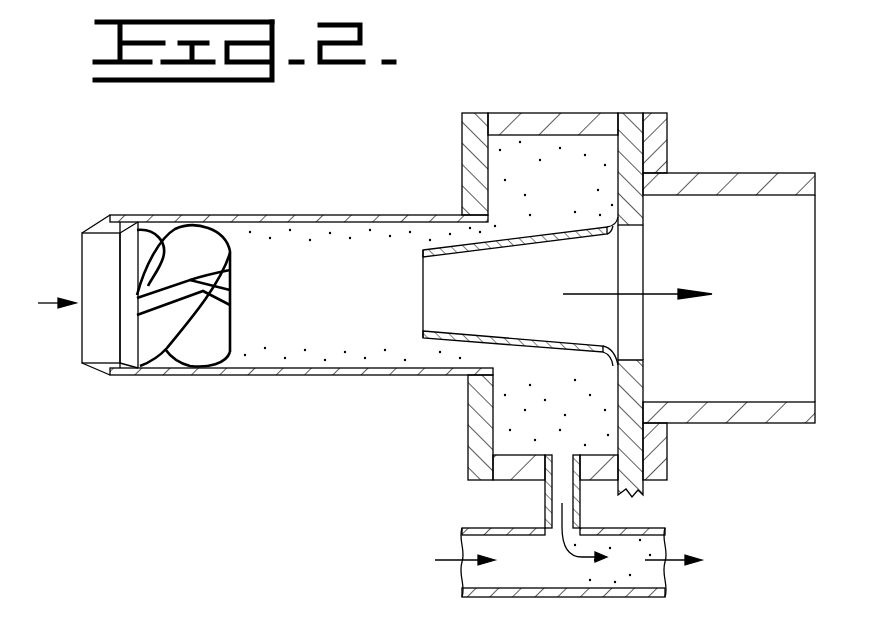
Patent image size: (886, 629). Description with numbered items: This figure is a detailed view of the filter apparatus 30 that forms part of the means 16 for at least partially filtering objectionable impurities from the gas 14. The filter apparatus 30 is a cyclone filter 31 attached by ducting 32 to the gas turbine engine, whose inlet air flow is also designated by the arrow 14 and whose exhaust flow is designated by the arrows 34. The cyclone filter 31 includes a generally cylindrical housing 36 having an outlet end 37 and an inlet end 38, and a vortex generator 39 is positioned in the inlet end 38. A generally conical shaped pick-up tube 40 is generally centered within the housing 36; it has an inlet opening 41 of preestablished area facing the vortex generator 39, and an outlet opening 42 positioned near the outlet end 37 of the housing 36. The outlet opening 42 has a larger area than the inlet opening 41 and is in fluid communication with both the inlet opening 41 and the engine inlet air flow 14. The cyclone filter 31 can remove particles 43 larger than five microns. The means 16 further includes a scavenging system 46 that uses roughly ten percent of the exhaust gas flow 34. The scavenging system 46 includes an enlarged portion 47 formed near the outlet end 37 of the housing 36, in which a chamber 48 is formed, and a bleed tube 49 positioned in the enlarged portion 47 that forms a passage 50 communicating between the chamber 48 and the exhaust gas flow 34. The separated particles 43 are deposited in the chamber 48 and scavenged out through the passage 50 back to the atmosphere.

The gas 14 is at (38, 303).
The means for at least partially filtering 16 is at (190, 523).
The filter apparatus 30 is at (318, 167).
The cyclone filter 31 is at (316, 375).
The ducting 32 is at (737, 423).
The exhaust flow 34 is at (456, 563).
The housing 36 is at (245, 215).
The outlet end 37 is at (643, 213).
The inlet end 38 is at (82, 252).
The vortex generator 39 is at (232, 325).
The pick-up tube 40 is at (552, 228).
The inlet opening 41 is at (423, 312).
The outlet opening 42 is at (618, 264).
The particles 43 is at (523, 393).
The scavenging system 46 is at (460, 512).
The enlarged portion 47 is at (548, 113).
The chamber 48 is at (505, 428).
The bleed tube 49 is at (545, 500).
The passage 50 is at (565, 503).